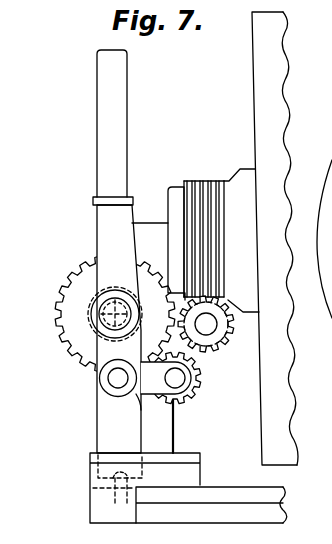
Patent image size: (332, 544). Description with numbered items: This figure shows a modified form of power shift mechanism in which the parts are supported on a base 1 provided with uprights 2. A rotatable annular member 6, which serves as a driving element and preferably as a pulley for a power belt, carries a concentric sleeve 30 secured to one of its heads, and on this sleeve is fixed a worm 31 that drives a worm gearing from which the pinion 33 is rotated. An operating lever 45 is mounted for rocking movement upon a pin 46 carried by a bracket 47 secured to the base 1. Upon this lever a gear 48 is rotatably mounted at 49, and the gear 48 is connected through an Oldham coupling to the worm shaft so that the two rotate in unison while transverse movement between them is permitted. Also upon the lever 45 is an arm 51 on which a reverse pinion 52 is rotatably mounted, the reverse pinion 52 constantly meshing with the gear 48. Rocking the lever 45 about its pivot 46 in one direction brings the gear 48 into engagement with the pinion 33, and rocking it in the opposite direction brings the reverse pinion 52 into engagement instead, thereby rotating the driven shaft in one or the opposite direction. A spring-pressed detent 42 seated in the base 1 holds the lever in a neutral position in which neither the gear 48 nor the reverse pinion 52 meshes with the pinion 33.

The base 1 is at (208, 493).
The upright 2 is at (166, 436).
The annular member 6 is at (262, 74).
The sleeve 30 is at (237, 166).
The worm 31 is at (205, 178).
The pinion 33 is at (216, 348).
The spring-pressed detent 42 is at (100, 500).
The lever 45 is at (105, 222).
The pin 46 is at (107, 378).
The bracket 47 is at (108, 432).
The gear 48 is at (76, 282).
The mounting 49 is at (113, 316).
The arm 51 is at (177, 400).
The reverse pinion 52 is at (203, 387).